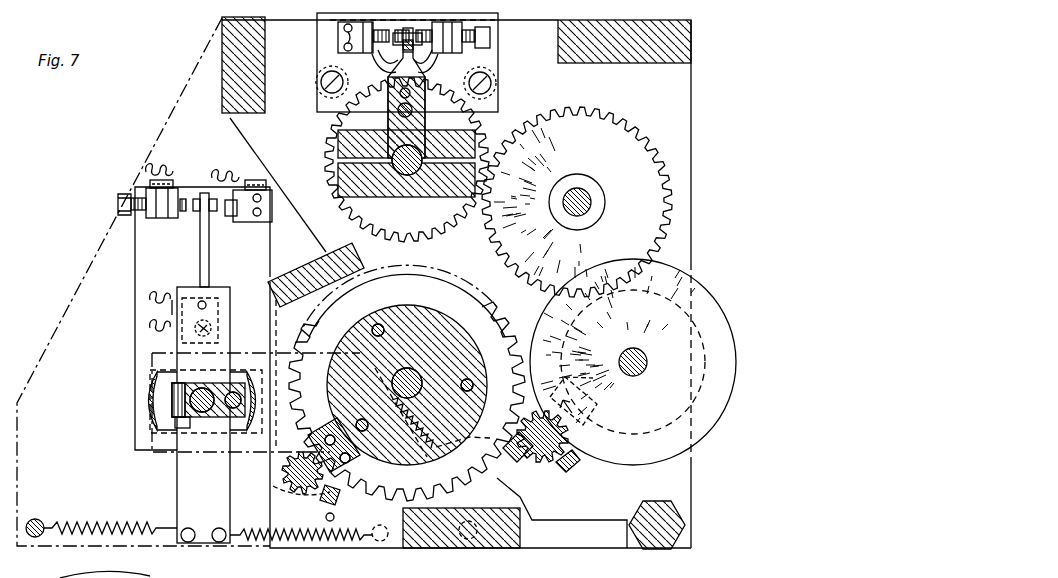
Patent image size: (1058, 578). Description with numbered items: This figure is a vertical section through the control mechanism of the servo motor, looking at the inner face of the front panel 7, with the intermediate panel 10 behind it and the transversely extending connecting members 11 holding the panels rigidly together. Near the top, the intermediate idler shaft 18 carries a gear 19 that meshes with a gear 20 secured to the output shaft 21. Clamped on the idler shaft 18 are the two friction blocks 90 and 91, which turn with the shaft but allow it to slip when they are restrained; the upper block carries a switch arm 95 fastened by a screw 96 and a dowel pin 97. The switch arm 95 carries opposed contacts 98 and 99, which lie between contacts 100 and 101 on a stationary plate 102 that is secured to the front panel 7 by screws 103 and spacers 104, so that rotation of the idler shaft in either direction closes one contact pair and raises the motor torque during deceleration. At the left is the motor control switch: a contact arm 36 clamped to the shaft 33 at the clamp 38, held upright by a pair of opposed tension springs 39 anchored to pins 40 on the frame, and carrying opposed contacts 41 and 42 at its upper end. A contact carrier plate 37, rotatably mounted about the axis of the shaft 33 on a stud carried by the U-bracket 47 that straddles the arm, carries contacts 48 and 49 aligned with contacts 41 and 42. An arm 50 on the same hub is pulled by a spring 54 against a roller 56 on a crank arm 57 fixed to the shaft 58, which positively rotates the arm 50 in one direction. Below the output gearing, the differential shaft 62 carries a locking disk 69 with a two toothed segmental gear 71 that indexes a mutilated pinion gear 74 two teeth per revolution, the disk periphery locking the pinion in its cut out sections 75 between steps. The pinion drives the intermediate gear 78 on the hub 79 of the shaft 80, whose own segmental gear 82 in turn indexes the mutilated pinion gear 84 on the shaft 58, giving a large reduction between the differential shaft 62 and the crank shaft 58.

The front panel 7 is at (693, 101).
The intermediate panel 10 is at (82, 287).
The connecting members 11 is at (266, 62).
The intermediate idler shaft 18 is at (414, 176).
The gear 19 is at (330, 151).
The gear 20 is at (578, 110).
The output shaft 21 is at (591, 202).
The shaft 33 is at (208, 410).
The contact arm 36 is at (200, 244).
The contact carrier plate 37 is at (136, 312).
The clamp 38 is at (176, 400).
The tension springs 39 is at (96, 540).
The pins 40 is at (40, 520).
The contact 41 is at (205, 204).
The contact 42 is at (216, 204).
The U-bracket 47 is at (150, 414).
The contact 48 is at (183, 204).
The contact 49 is at (235, 214).
The arm 50 is at (150, 360).
The spring 54 is at (463, 450).
The roller 56 is at (338, 500).
The crank arm 57 is at (282, 496).
The shaft 58 is at (300, 474).
The differential shaft 62 is at (634, 350).
The locking disk 69 is at (736, 332).
The two toothed segmental gear 71 is at (582, 388).
The mutilated pinion gear 74 is at (568, 468).
The cut out sections 75 is at (534, 462).
The gear 78 is at (490, 304).
The hub 79 is at (472, 332).
The shaft 80 is at (421, 378).
The two toothed segmental gear 82 is at (404, 429).
The mutilated pinion gear 84 is at (334, 517).
The block 90 is at (345, 148).
The block 91 is at (340, 180).
The switch arm 95 is at (392, 128).
The screw 96 is at (427, 107).
The dowel pin 97 is at (399, 95).
The contact 98 is at (377, 72).
The contact 99 is at (434, 69).
The contact 100 is at (373, 46).
The contact 101 is at (456, 46).
The stationary plate 102 is at (497, 47).
The screws 103 is at (322, 88).
The spacers 104 is at (320, 68).